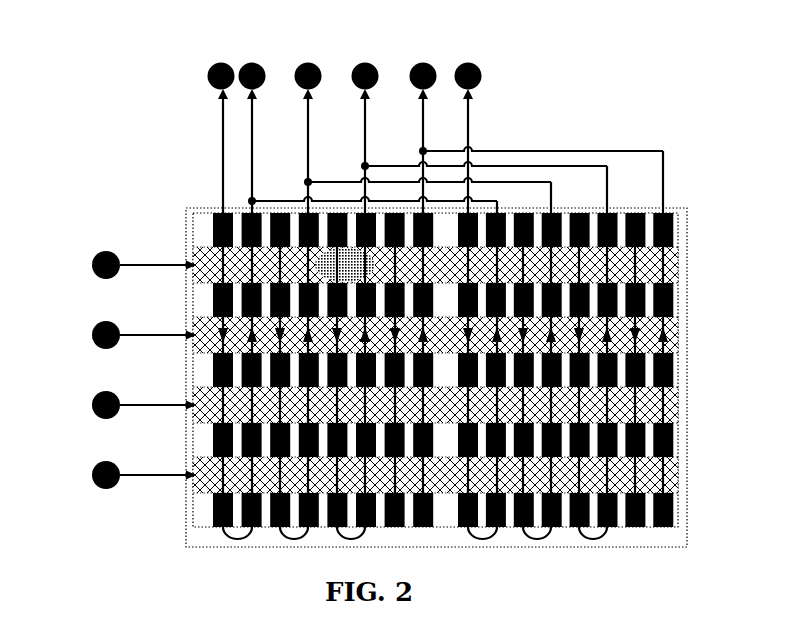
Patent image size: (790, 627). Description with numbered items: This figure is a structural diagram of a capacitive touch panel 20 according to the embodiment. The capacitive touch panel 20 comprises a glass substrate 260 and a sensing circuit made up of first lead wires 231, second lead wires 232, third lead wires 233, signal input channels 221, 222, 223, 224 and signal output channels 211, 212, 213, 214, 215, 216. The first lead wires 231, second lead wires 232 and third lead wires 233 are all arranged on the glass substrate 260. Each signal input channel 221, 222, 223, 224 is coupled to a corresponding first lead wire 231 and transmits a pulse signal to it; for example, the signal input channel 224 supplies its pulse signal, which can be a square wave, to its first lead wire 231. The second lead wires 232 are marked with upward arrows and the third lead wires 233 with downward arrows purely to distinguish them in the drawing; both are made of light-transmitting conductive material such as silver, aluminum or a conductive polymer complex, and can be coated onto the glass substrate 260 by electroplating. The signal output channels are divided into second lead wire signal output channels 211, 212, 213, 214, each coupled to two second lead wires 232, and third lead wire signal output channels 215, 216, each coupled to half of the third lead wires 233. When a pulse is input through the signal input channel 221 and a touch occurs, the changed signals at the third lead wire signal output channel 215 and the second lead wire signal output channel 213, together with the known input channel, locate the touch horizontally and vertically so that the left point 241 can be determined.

The capacitive touch panel 20 is at (27, 20).
The second lead wire signal output channel 211 is at (262, 65).
The second lead wire signal output channel 212 is at (318, 65).
The second lead wire signal output channel 213 is at (375, 65).
The second lead wire signal output channel 214 is at (433, 65).
The third lead wire signal output channel 215 is at (212, 65).
The third lead wire signal output channel 216 is at (478, 65).
The signal input channel 221 is at (93, 260).
The signal input channel 222 is at (93, 330).
The signal input channel 223 is at (93, 400).
The signal input channel 224 is at (93, 470).
The first lead wires 231 is at (677, 478).
The second lead wires 232 is at (678, 330).
The third lead wires 233 is at (675, 398).
The left point 241 is at (242, 215).
The glass substrate 260 is at (687, 273).